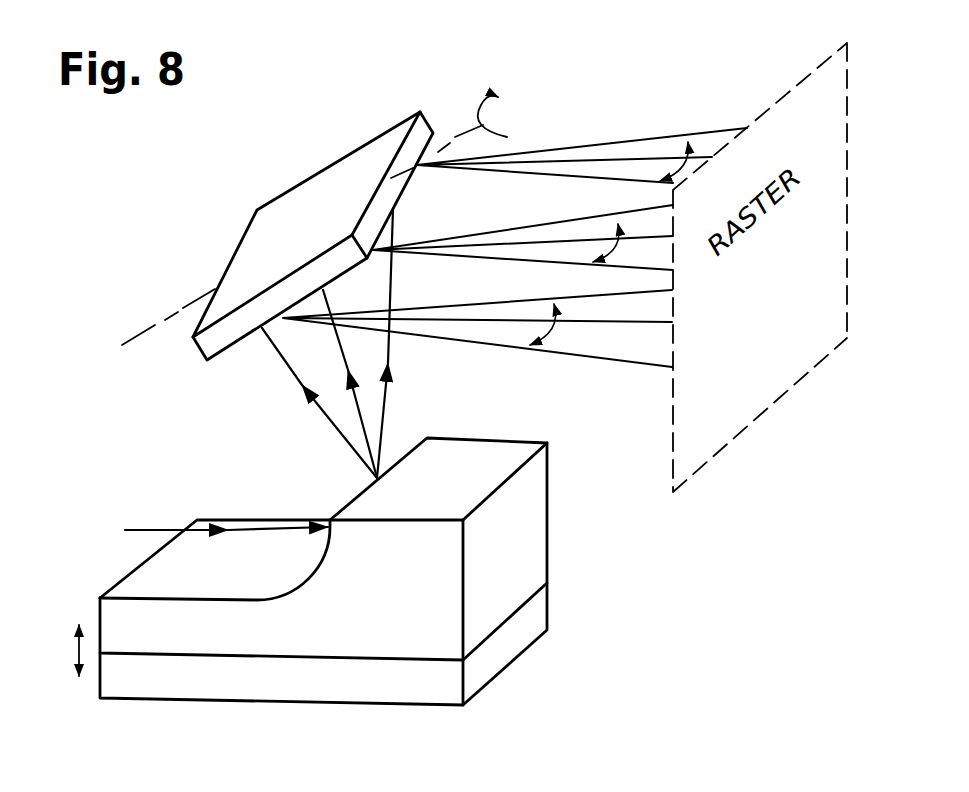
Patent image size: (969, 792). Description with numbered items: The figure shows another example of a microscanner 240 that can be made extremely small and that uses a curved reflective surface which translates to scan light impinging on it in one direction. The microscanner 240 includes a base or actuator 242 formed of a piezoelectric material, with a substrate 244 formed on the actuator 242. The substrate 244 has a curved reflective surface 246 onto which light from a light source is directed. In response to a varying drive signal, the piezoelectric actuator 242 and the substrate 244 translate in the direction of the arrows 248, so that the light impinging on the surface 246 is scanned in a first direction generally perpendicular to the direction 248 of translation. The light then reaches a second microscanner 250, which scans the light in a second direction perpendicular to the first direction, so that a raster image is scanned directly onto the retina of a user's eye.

The microscanner 240 is at (350, 594).
The base or actuator 242 is at (435, 707).
The substrate 244 is at (535, 477).
The curved reflective surface 246 is at (328, 523).
The arrows 248 is at (77, 650).
The second microscanner 250 is at (243, 245).